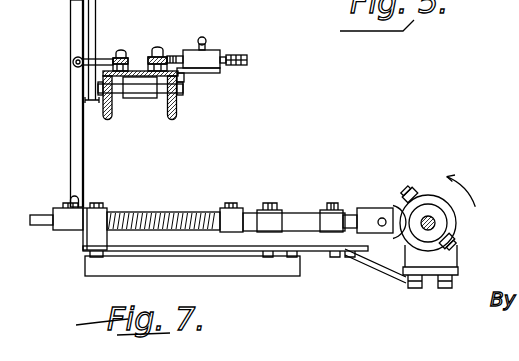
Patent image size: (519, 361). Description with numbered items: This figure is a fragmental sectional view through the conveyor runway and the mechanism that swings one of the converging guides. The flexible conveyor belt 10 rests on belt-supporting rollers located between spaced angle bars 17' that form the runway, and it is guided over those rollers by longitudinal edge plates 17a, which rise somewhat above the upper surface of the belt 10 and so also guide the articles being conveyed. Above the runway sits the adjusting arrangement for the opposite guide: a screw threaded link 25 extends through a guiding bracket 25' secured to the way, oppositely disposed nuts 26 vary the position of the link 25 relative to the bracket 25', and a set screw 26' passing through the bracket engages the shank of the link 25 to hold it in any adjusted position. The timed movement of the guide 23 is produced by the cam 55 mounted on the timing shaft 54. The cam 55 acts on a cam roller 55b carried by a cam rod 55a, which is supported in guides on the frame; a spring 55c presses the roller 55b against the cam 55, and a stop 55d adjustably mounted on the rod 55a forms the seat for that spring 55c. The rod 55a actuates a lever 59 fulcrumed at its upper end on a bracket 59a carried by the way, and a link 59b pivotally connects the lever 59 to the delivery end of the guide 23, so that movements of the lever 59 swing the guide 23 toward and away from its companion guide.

The lever 59 is at (71, 155).
The bracket 59a is at (93, 5).
The link 59b is at (110, 57).
The converging guide 23 is at (131, 67).
The conveyor belt 10 is at (140, 72).
The angle bars 17' is at (154, 108).
The edge plates 17a is at (118, 96).
The guiding bracket 25' is at (211, 47).
The set screw 26' is at (214, 27).
The nuts 26 is at (217, 39).
The screw threaded link 25 is at (240, 73).
The spring 55c is at (172, 212).
The stop 55d is at (241, 208).
The cam rod 55a is at (302, 212).
The cam roller 55b is at (384, 207).
The cam 55 is at (460, 215).
The timing shaft 54 is at (450, 240).